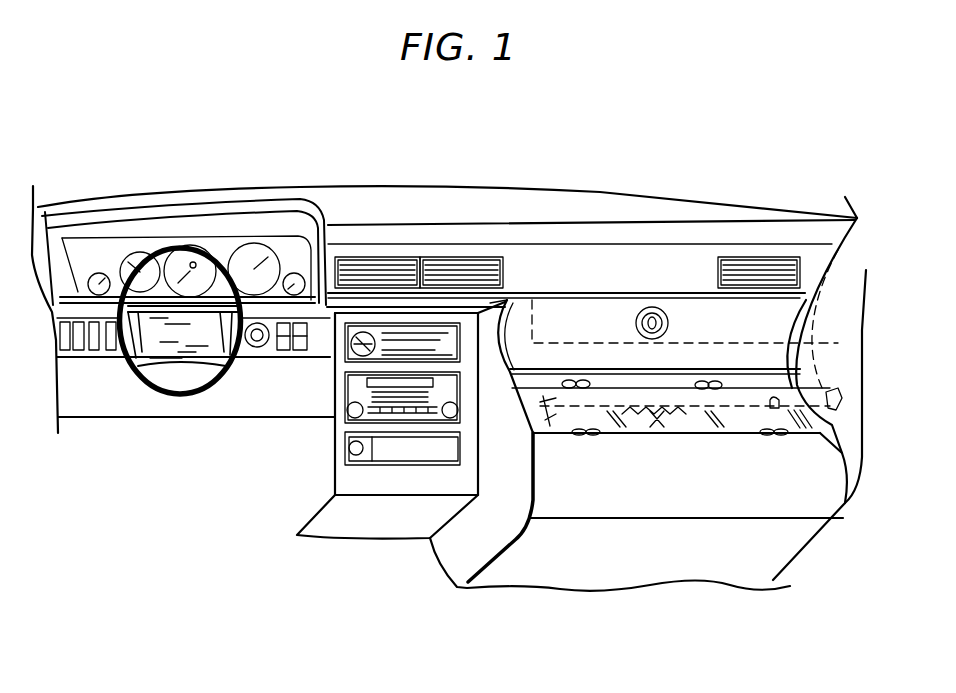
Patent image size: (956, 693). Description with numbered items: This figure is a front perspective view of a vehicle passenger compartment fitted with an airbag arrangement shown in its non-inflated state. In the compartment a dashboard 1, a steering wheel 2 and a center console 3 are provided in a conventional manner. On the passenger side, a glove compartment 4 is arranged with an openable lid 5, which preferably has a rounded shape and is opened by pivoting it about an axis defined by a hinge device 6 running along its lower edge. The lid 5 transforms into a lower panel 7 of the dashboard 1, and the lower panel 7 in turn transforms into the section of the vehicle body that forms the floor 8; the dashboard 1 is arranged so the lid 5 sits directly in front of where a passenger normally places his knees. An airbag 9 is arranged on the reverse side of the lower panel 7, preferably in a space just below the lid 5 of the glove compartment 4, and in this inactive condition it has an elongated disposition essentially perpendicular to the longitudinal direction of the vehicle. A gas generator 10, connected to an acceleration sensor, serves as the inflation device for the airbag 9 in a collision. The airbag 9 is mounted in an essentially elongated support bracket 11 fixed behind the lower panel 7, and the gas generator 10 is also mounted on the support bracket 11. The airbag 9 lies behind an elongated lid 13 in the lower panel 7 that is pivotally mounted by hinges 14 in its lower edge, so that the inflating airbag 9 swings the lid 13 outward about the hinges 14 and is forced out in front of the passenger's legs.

The dashboard 1 is at (411, 212).
The steering wheel 2 is at (225, 258).
The center console 3 is at (402, 478).
The glove compartment 4 is at (838, 343).
The lid 5 is at (710, 330).
The hinge device 6 is at (572, 379).
The lower panel 7 is at (866, 270).
The floor 8 is at (532, 564).
The airbag 9 is at (823, 390).
The gas generator 10 is at (653, 410).
The support bracket 11 is at (753, 410).
The lid 13 is at (713, 410).
The hinges 14 is at (590, 437).